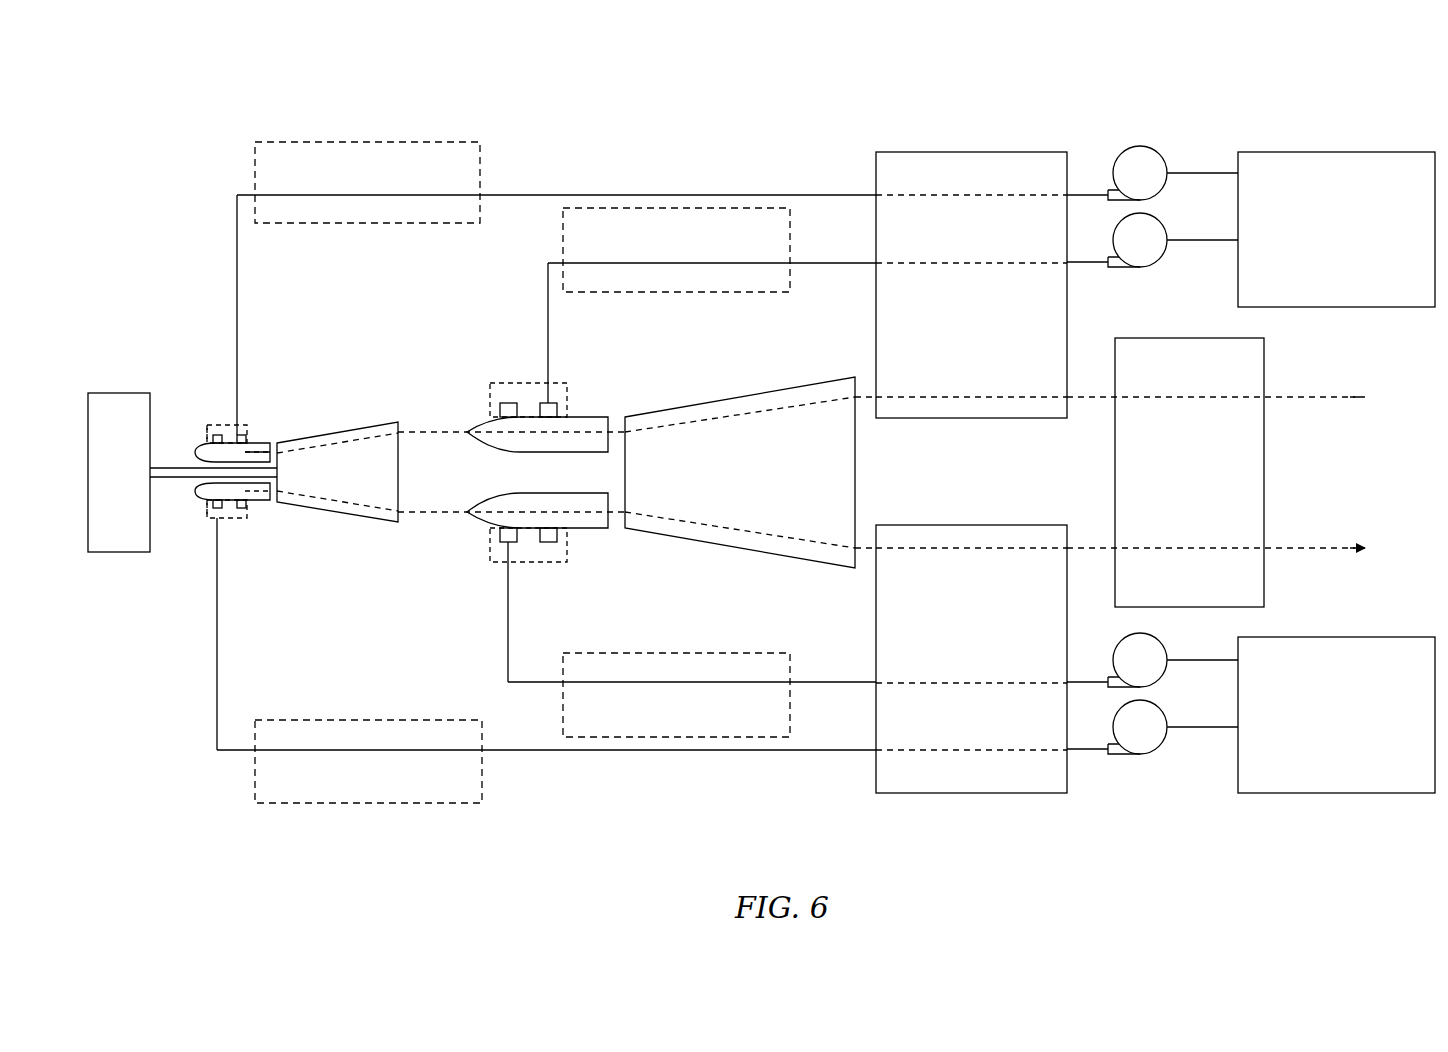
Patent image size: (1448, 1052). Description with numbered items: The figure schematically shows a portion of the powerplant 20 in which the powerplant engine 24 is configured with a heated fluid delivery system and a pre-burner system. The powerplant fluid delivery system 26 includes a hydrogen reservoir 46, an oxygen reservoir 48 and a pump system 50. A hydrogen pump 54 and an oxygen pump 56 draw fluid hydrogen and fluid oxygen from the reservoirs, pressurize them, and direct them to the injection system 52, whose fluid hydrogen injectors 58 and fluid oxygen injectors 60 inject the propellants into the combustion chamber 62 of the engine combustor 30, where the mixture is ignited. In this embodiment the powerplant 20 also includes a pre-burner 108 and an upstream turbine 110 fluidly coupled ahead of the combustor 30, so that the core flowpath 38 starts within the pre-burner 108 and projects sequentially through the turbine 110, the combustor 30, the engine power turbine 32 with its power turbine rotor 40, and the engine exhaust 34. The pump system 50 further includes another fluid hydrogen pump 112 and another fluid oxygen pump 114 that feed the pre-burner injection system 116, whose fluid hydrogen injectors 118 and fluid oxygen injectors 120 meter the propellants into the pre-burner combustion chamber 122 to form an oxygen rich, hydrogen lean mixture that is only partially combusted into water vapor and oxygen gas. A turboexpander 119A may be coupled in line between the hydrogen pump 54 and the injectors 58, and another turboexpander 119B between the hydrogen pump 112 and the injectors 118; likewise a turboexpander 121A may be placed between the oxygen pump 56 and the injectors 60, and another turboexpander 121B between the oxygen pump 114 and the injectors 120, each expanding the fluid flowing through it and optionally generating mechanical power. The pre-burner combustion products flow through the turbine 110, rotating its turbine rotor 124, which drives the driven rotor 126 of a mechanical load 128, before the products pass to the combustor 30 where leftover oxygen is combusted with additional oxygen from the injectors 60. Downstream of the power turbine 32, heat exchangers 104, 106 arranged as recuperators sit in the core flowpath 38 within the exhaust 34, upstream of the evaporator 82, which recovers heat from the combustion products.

The powerplant 20 is at (186, 149).
The powerplant engine 24 is at (668, 394).
The powerplant fluid delivery system 26 is at (1286, 96).
The engine combustor 30 is at (611, 536).
The engine power turbine 32 is at (752, 385).
The engine exhaust 34 is at (1333, 358).
The core flowpath 38 is at (412, 522).
The power turbine rotor 40 is at (800, 378).
The hydrogen reservoir 46 is at (1337, 793).
The oxygen reservoir 48 is at (1338, 152).
The pump system 50 is at (1131, 107).
The injection system 52 is at (528, 383).
The hydrogen pump 54 is at (1163, 637).
The oxygen pump 56 is at (1165, 252).
The fluid hydrogen injectors 58 is at (500, 412).
The fluid oxygen injectors 60 is at (553, 403).
The combustion chamber 62 is at (543, 498).
The evaporator 82 is at (1264, 445).
The heat exchanger 104 is at (975, 793).
The heat exchanger 106 is at (972, 152).
The pre-burner 108 is at (187, 499).
The turbine 110 is at (335, 419).
The fluid hydrogen pump 112 is at (1153, 755).
The fluid oxygen pump 114 is at (1152, 147).
The injection system 116 is at (225, 425).
The fluid hydrogen injectors 118 is at (207, 425).
The fluid oxygen injectors 120 is at (242, 435).
The turboexpander 121A is at (640, 208).
The turboexpander 121B is at (330, 142).
The turboexpander 119A is at (715, 738).
The turboexpander 119B is at (433, 805).
The combustion chamber 122 is at (200, 450).
The turbine rotor 124 is at (385, 422).
The driven rotor 126 is at (97, 393).
The mechanical load 128 is at (118, 386).